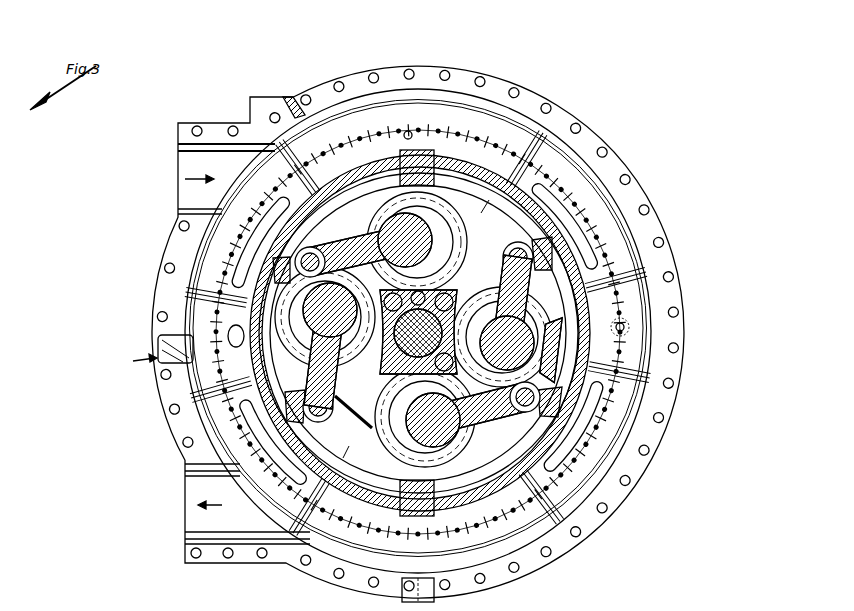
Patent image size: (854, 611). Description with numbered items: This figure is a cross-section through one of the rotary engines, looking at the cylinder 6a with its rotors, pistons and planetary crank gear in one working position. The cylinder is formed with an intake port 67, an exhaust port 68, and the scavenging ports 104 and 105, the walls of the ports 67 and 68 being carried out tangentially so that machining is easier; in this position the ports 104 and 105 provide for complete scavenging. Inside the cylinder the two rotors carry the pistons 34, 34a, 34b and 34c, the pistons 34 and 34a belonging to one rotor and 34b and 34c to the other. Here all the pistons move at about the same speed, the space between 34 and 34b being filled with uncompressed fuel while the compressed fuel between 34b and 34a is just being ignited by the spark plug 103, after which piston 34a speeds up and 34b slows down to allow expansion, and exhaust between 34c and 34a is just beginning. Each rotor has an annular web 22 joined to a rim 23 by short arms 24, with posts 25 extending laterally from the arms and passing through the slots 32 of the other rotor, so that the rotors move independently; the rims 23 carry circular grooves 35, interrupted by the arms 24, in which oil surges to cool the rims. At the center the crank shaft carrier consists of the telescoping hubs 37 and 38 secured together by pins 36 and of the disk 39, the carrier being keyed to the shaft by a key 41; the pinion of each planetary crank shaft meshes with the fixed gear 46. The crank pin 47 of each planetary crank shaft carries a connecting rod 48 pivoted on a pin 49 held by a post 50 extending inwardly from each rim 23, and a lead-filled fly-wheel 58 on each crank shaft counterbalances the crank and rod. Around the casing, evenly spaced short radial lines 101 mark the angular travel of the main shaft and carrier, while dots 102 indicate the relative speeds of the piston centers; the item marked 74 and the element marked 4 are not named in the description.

The cylinder 6a is at (499, 123).
The pointer 74 is at (408, 129).
The short radial lines 101 is at (341, 137).
The dots 102 is at (460, 128).
The intake port 67 is at (190, 167).
The exhaust port 68 is at (195, 497).
The piston 34 is at (212, 272).
The piston 34a is at (627, 387).
The piston 34b is at (620, 255).
The piston 34c is at (213, 403).
The scavenging port 104 is at (233, 325).
The scavenging port 105 is at (167, 347).
The spark plug 103 is at (624, 327).
The disk 39 is at (472, 260).
The slots 32 is at (343, 458).
The short arms 24 is at (410, 487).
The rim 23 is at (348, 176).
The circular grooves 35 is at (494, 476).
The annular web 22 is at (418, 333).
The fly-wheel 58 is at (413, 329).
The post 50 is at (492, 482).
The gear 46 is at (522, 297).
The crank pin 47 is at (455, 430).
The connecting rod 48 is at (312, 352).
The pin 49 is at (526, 414).
The posts 25 is at (546, 392).
The shaft 4 is at (392, 350).
The pins 36 is at (384, 298).
The key 41 is at (420, 296).
The telescoping hub 37 is at (450, 298).
The telescoping hub 38 is at (449, 368).